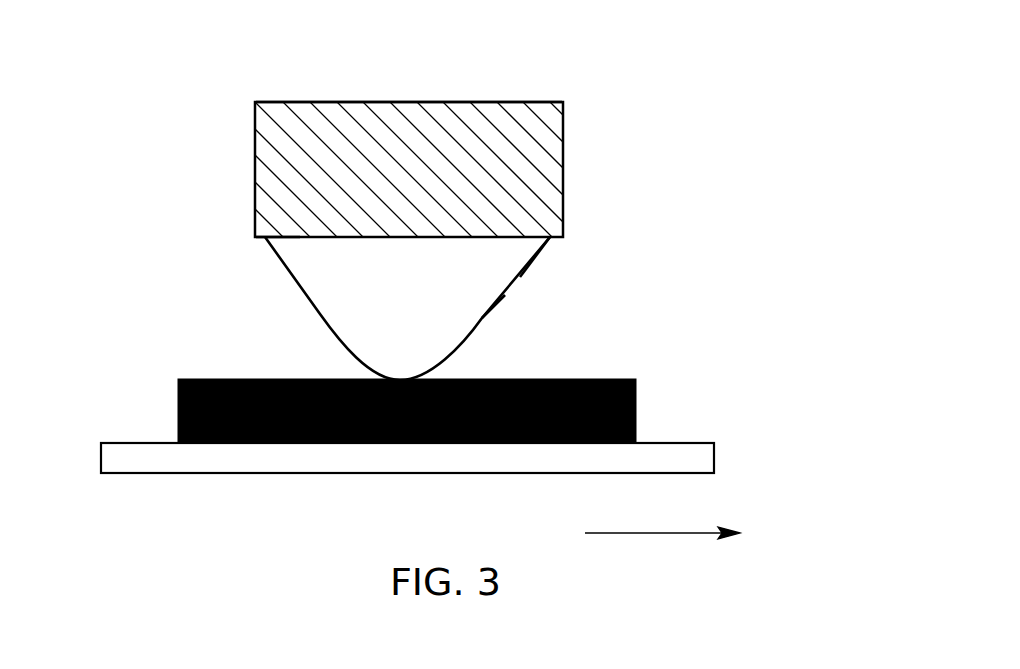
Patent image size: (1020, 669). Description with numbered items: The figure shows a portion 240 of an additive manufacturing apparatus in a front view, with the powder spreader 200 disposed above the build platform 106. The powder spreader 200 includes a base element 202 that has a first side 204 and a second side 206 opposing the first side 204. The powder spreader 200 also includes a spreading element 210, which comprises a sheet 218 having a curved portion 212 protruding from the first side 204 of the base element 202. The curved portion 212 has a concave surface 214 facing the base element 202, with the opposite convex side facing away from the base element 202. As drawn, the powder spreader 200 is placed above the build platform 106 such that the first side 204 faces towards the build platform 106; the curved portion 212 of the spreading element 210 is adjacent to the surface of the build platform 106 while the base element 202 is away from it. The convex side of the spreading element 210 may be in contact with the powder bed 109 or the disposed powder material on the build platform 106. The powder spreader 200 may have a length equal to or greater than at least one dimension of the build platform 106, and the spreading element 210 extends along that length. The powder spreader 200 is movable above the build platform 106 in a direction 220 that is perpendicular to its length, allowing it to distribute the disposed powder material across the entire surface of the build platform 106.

The portion of the additive manufacturing apparatus 240 is at (633, 60).
The base element 202 is at (550, 133).
The second side 206 is at (325, 102).
The first side 204 is at (259, 242).
The spreading element 210 is at (315, 308).
The sheet 218 is at (535, 260).
The concave surface 214 is at (487, 318).
The curved portion 212 is at (673, 237).
The powder spreader 200 is at (128, 103).
The powder bed 109 is at (636, 409).
The build platform 106 is at (714, 455).
The direction 220 is at (661, 533).